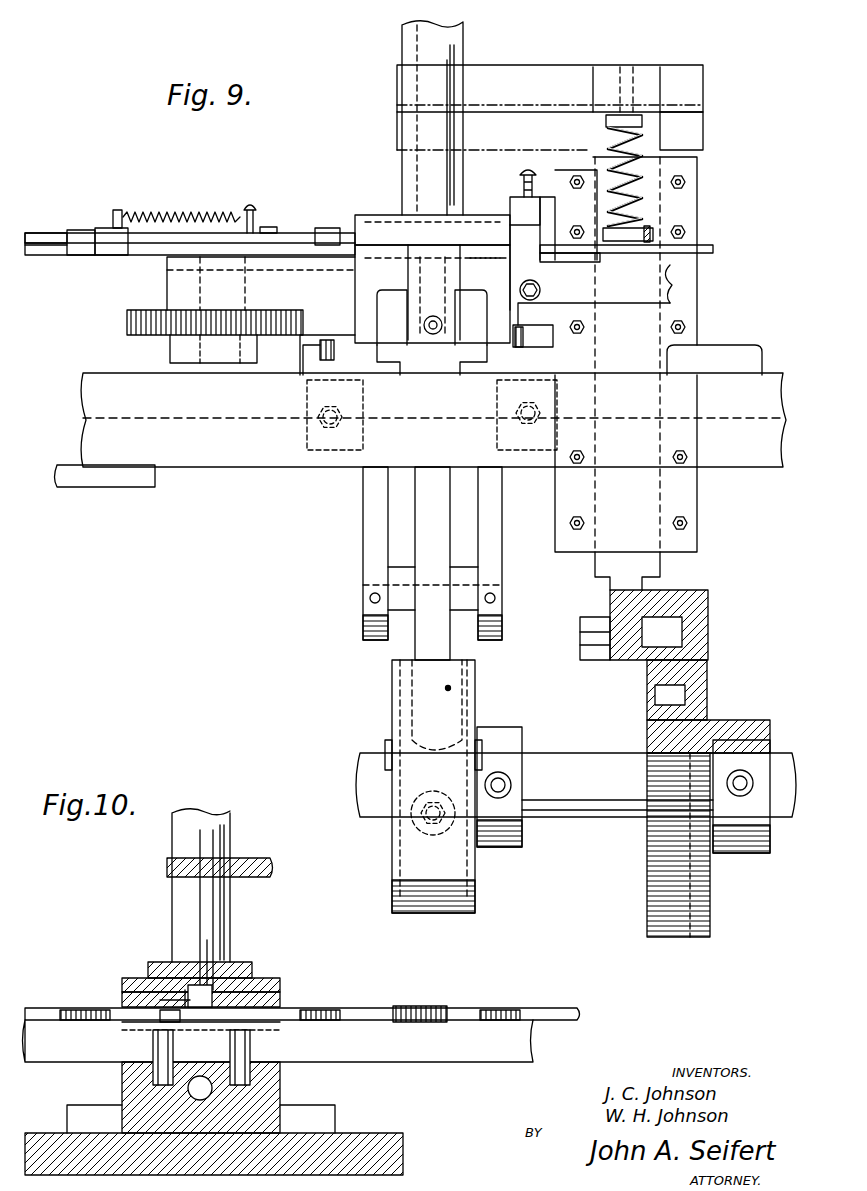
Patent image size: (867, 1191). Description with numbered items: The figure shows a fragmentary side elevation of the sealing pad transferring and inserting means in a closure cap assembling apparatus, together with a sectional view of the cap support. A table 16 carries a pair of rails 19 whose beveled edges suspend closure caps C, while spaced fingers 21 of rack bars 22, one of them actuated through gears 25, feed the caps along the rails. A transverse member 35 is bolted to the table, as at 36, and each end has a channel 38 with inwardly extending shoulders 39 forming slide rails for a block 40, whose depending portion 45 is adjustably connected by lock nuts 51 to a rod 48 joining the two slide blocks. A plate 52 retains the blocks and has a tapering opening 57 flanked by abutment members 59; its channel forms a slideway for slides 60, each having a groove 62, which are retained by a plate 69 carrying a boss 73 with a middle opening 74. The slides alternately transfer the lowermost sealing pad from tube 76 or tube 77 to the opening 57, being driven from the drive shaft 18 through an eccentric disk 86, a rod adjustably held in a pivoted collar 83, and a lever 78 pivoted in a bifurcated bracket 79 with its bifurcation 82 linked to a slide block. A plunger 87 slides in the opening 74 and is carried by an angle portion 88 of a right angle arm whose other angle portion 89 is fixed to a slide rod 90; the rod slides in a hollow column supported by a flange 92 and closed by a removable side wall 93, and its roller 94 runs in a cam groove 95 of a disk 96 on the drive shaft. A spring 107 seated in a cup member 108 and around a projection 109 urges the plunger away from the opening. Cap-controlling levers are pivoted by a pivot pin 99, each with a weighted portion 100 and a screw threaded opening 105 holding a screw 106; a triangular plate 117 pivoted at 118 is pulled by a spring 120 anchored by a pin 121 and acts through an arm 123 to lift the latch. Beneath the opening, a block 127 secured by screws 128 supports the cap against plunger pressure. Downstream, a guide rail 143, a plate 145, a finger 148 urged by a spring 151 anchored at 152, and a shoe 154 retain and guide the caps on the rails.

In FIG. 9, the table 16 is at (215, 478).
In FIG. 10, the table 16 is at (390, 1135).
In FIG. 9, the drive shaft 18 is at (568, 753).
In FIG. 9, the rails 19 is at (140, 256).
In FIG. 10, the rails 19 is at (495, 1008).
In FIG. 10, the fingers 21 is at (365, 1010).
In FIG. 10, the rack bars 22 is at (470, 1062).
In FIG. 9, the gears 25 is at (125, 325).
In FIG. 9, the transverse member 35 is at (360, 315).
In FIG. 10, the transverse member 35 is at (280, 1088).
In FIG. 9, the bolts in flanges 36 is at (305, 347).
In FIG. 10, the bolts in flanges 36 is at (330, 1120).
In FIG. 9, the channel 38 is at (386, 346).
In FIG. 9, the shoulders 39 is at (390, 268).
In FIG. 9, the block 40 is at (472, 258).
In FIG. 9, the depending portion 45 is at (460, 326).
In FIG. 10, the rod 48 is at (180, 1098).
In FIG. 9, the lock nuts 51 is at (445, 330).
In FIG. 9, the plate 52 is at (365, 226).
In FIG. 10, the plate 52 is at (120, 997).
In FIG. 10, the opening 57 is at (165, 1015).
In FIG. 10, the abutment members 59 is at (205, 985).
In FIG. 10, the slides 60 is at (160, 1000).
In FIG. 10, the groove 62 is at (185, 990).
In FIG. 9, the plate 69 is at (370, 215).
In FIG. 10, the plate 69 is at (280, 988).
In FIG. 10, the boss 73 is at (252, 970).
In FIG. 10, the opening 74 is at (215, 957).
In FIG. 9, the tube 76 is at (400, 30).
In FIG. 10, the tube 77 is at (230, 905).
In FIG. 9, the lever 78 is at (415, 532).
In FIG. 9, the bifurcated bracket 79 is at (363, 515).
In FIG. 9, the bifurcation 82 is at (380, 302).
In FIG. 9, the pivoted collar 83 is at (390, 740).
In FIG. 9, the eccentric disk 86 is at (478, 690).
In FIG. 9, the plunger 87 is at (415, 128).
In FIG. 10, the plunger 87 is at (213, 925).
In FIG. 9, the angle portion 88 is at (516, 65).
In FIG. 10, the angle portion 88 is at (270, 866).
In FIG. 9, the angle portion 89 is at (648, 67).
In FIG. 9, the slide rod 90 is at (703, 131).
In FIG. 9, the flange 92 is at (740, 345).
In FIG. 9, the removable side wall 93 is at (680, 302).
In FIG. 9, the roller 94 is at (710, 612).
In FIG. 9, the cam groove 95 is at (647, 906).
In FIG. 9, the disk 96 is at (710, 673).
In FIG. 9, the pivot pin 99 is at (600, 257).
In FIG. 9, the weighted portion 100 is at (576, 209).
In FIG. 9, the screw threaded opening 105 is at (510, 199).
In FIG. 9, the screw 106 is at (520, 172).
In FIG. 9, the spring 107 is at (640, 176).
In FIG. 9, the cup member 108 is at (655, 233).
In FIG. 9, the projection 109 is at (644, 121).
In FIG. 9, the triangular plate 117 is at (540, 290).
In FIG. 9, the pivot mounting 118 is at (548, 197).
In FIG. 9, the spring 120 is at (580, 305).
In FIG. 9, the pin 121 is at (533, 326).
In FIG. 9, the arm 123 is at (478, 200).
In FIG. 10, the block 127 is at (285, 1025).
In FIG. 10, the screws 128 is at (285, 1031).
In FIG. 9, the guide rail 143 is at (40, 230).
In FIG. 9, the plate 145 is at (50, 257).
In FIG. 9, the finger 148 is at (100, 228).
In FIG. 9, the spring 151 is at (150, 213).
In FIG. 9, the spring anchorage 152 is at (250, 205).
In FIG. 9, the shoe 154 is at (80, 257).
In FIG. 10, the closure caps C is at (75, 1010).